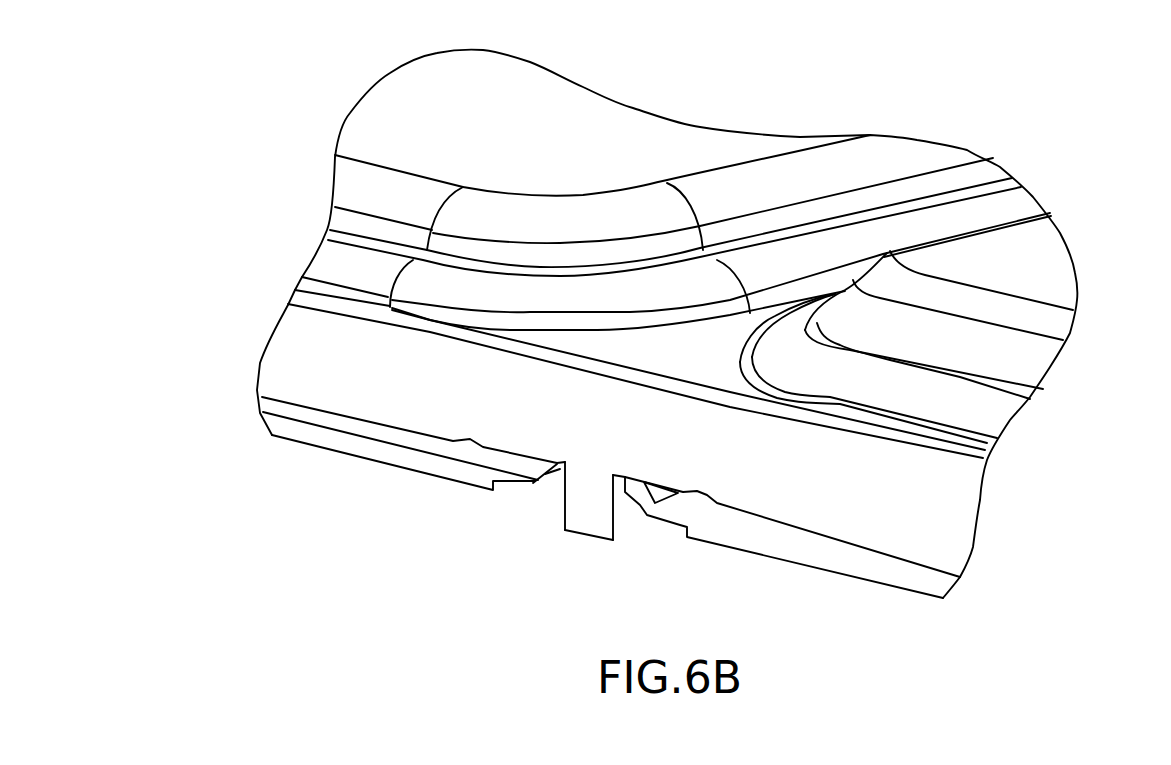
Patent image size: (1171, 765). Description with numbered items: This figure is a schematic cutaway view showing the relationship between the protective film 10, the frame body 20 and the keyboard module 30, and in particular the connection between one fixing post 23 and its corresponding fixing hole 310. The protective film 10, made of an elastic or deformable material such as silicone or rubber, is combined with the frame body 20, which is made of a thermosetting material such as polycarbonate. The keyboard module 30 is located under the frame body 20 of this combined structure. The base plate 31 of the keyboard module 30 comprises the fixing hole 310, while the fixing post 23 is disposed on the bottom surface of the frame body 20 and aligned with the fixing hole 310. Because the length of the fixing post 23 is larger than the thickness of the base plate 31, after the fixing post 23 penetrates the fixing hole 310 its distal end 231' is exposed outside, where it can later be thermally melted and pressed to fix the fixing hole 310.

The protective film 10 is at (1055, 262).
The frame body 20 is at (282, 352).
The fixing post 23 is at (585, 483).
The distal end of the fixing post 231' is at (572, 560).
The keyboard module 30 is at (611, 497).
The base plate 31 is at (397, 453).
The fixing hole 310 is at (538, 478).